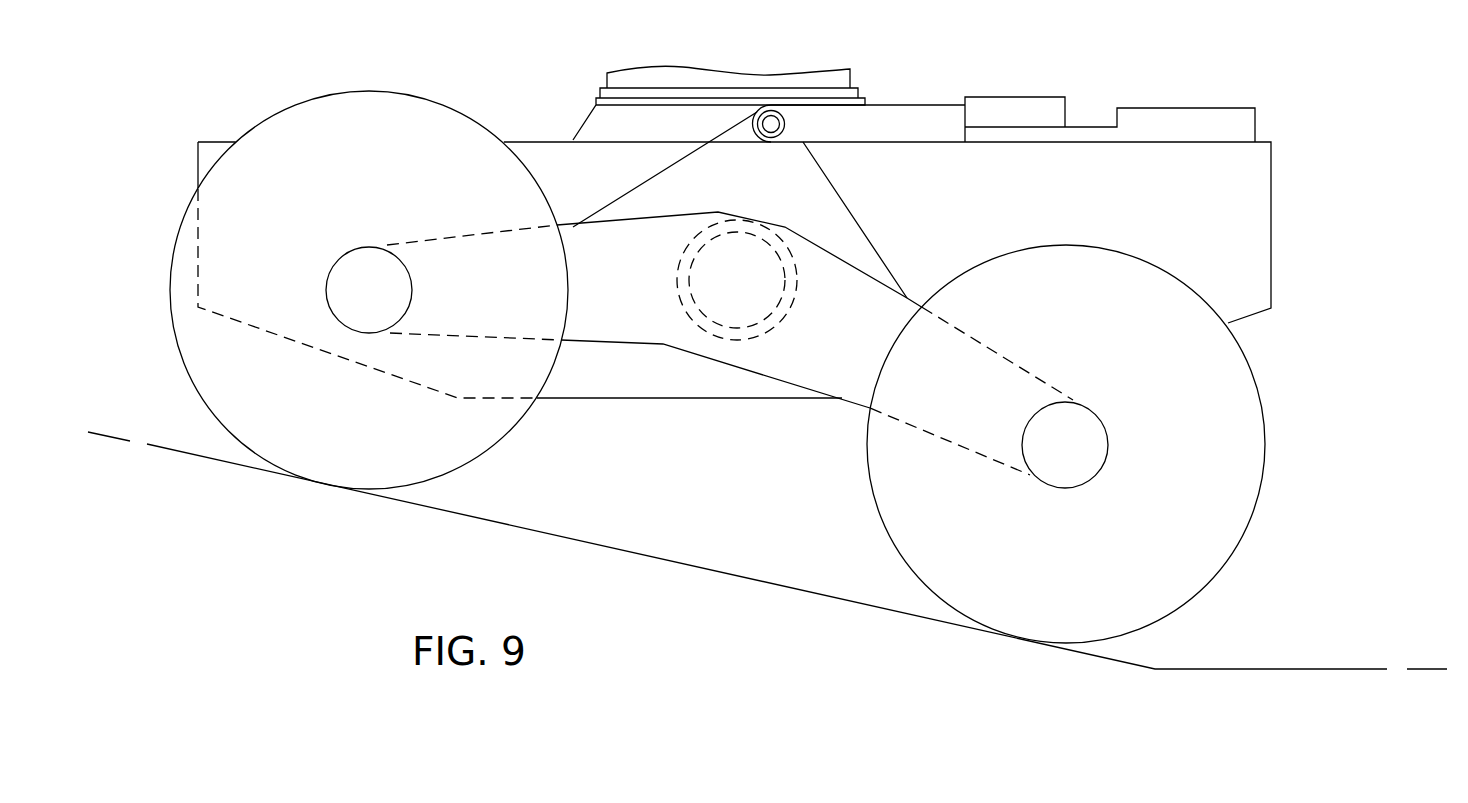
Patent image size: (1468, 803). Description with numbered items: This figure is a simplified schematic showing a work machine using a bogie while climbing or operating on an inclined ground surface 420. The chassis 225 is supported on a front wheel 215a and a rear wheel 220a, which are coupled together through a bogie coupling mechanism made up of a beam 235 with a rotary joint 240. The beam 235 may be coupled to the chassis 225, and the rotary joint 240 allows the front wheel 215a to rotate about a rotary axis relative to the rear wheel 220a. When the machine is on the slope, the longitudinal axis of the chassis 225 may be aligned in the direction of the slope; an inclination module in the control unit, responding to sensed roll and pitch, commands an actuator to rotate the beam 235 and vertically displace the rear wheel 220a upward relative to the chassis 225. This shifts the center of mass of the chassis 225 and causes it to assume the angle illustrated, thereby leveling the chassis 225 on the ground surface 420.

The front wheel 215a is at (320, 212).
The rear wheel 220a is at (1070, 595).
The chassis 225 is at (985, 205).
The beam 235 is at (730, 290).
The rotary joint 240 is at (747, 344).
The ground surface 420 is at (797, 673).